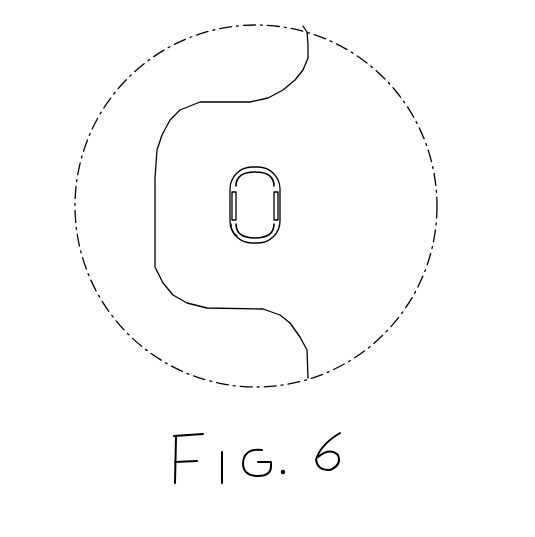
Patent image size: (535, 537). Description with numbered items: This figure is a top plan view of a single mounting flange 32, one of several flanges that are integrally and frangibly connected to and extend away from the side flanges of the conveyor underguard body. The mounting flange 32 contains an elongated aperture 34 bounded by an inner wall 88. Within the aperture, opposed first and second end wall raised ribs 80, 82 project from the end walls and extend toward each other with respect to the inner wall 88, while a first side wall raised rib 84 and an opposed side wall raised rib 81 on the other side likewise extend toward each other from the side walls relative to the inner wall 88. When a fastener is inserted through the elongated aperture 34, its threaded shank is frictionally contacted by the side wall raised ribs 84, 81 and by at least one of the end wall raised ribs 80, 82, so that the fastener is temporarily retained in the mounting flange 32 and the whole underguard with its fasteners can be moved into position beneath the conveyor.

The mounting flange 32 is at (175, 270).
The elongated aperture 34 is at (279, 180).
The first end wall raised rib 80 is at (250, 165).
The second end wall raised rib 82 is at (253, 243).
The first side wall raised rib 84 is at (280, 199).
The left side wall of slot 81 is at (230, 210).
The inner wall 88 is at (232, 230).